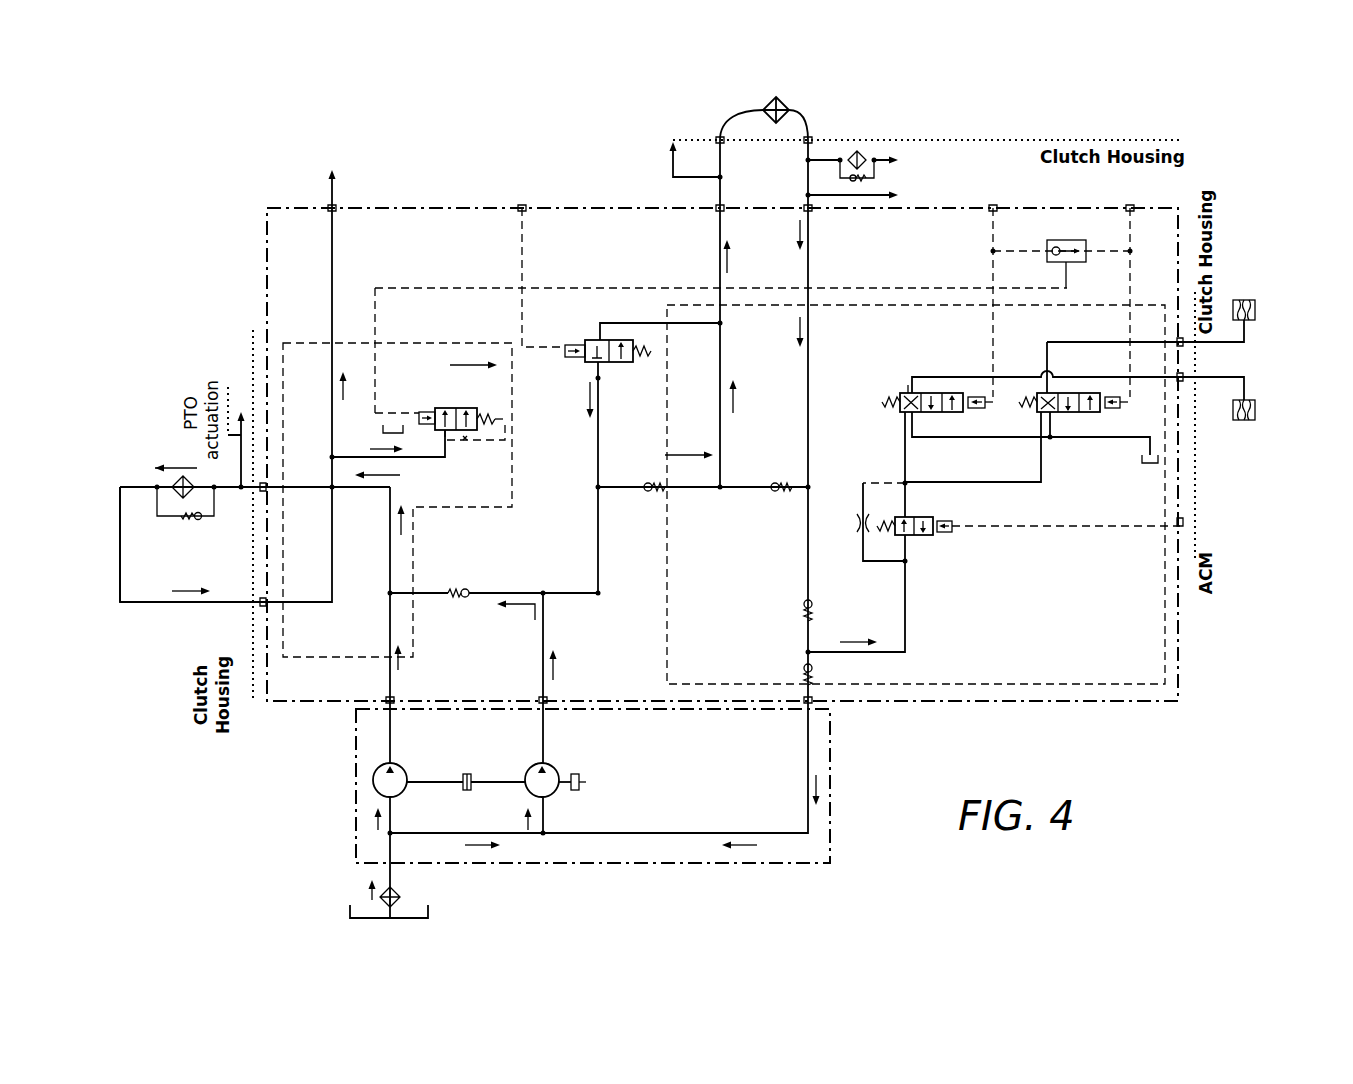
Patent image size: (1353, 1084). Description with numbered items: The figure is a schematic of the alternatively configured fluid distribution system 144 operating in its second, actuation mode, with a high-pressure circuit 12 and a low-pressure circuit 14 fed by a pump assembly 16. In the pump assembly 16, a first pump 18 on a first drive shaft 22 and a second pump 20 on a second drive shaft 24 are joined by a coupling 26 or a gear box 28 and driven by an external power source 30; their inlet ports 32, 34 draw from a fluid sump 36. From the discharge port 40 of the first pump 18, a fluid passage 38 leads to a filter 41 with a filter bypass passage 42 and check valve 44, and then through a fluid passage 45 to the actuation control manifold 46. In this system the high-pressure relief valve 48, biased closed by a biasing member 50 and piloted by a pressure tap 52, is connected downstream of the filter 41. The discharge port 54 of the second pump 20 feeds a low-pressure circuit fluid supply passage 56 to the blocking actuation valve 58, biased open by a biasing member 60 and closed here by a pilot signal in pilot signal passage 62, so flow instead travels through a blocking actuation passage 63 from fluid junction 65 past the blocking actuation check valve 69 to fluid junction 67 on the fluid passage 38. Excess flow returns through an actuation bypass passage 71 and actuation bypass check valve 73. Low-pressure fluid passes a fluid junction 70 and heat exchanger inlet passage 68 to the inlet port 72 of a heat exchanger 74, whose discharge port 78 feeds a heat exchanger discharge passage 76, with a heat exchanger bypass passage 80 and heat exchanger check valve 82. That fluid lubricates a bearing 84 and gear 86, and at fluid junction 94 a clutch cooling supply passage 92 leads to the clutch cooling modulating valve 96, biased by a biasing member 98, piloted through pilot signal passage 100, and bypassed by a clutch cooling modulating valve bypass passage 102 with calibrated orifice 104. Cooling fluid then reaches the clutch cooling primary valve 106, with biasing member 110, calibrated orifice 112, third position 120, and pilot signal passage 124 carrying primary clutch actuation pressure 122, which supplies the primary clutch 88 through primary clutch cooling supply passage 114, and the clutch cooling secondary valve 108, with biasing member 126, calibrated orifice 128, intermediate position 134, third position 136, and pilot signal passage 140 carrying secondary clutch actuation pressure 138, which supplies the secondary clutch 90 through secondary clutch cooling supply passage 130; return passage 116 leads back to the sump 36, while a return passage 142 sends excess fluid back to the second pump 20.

The fluid distribution system 144 is at (260, 189).
The actuation control manifold 46 is at (331, 163).
The fluid passage 45 is at (334, 237).
The high-pressure circuit 12 is at (300, 340).
The pilot signal passage 62 is at (523, 245).
The high-pressure relief valve 48 is at (433, 412).
The pressure tap 52 is at (490, 446).
The biasing member 50 is at (432, 432).
The blocking actuation valve 58 is at (590, 364).
The biasing member 60 is at (648, 354).
The low-pressure circuit fluid supply passage 56 is at (599, 458).
The actuation bypass passage 71 is at (690, 486).
The actuation bypass check valve 73 is at (650, 492).
The heat exchanger bypass passage 80 is at (732, 489).
The heat exchanger check valve 82 is at (784, 493).
The heat exchanger inlet passage 68 is at (722, 226).
The fluid junction 70 is at (722, 322).
The inlet port 72 is at (718, 138).
The heat exchanger 74 is at (768, 103).
The discharge port 78 is at (812, 138).
The bearing 84 is at (925, 164).
The gear 86 is at (913, 194).
The secondary clutch actuation pressure 138 is at (999, 206).
The primary clutch actuation pressure 122 is at (1135, 206).
The pilot signal passage 140 is at (992, 246).
The pilot signal passage 124 is at (1131, 267).
The primary clutch cooling supply passage 114 is at (1147, 341).
The clutch cooling primary valve 106 is at (1070, 392).
The calibrated orifice 112 is at (1046, 390).
The biasing member 110 is at (1028, 392).
The primary clutch 88 is at (1245, 300).
The secondary clutch 90 is at (1245, 421).
The heat exchanger discharge passage 76 is at (810, 365).
The clutch cooling secondary valve 108 is at (931, 392).
The secondary clutch cooling supply passage 130 is at (953, 392).
The calibrated orifice 128 is at (899, 393).
The intermediate position 134 is at (897, 391).
The biasing member 126 is at (880, 402).
The third position 136 is at (966, 410).
The third position 120 is at (1101, 409).
The return passage 116 is at (940, 439).
The fluid sump 36 is at (1147, 470).
The clutch cooling modulating valve bypass passage 102 is at (864, 480).
The calibrated orifice 104 is at (858, 521).
The biasing member 98 is at (885, 518).
The clutch cooling modulating valve 96 is at (938, 521).
The pilot signal passage 100 is at (1031, 527).
The clutch cooling supply passage 92 is at (907, 610).
The fluid junction 94 is at (806, 652).
The low-pressure circuit 14 is at (1167, 668).
The pump assembly 16 is at (833, 820).
The return passage 142 is at (806, 790).
The fluid passage 38 is at (388, 582).
The fluid junction 67 is at (388, 596).
The blocking actuation check valve 69 is at (461, 598).
The blocking actuation passage 63 is at (494, 592).
The fluid junction 65 is at (545, 592).
The filter 41 is at (172, 482).
The check valve 44 is at (201, 512).
The filter bypass passage 42 is at (157, 503).
The first pump 18 is at (373, 784).
The discharge port 40 is at (383, 766).
The inlet port 32 is at (387, 799).
The first drive shaft 22 is at (462, 779).
The gear box 28 is at (471, 778).
The second drive shaft 24 is at (495, 787).
The coupling 26 is at (478, 790).
The second pump 20 is at (560, 794).
The discharge port 54 is at (546, 762).
The inlet port 34 is at (551, 795).
The external power source 30 is at (583, 775).